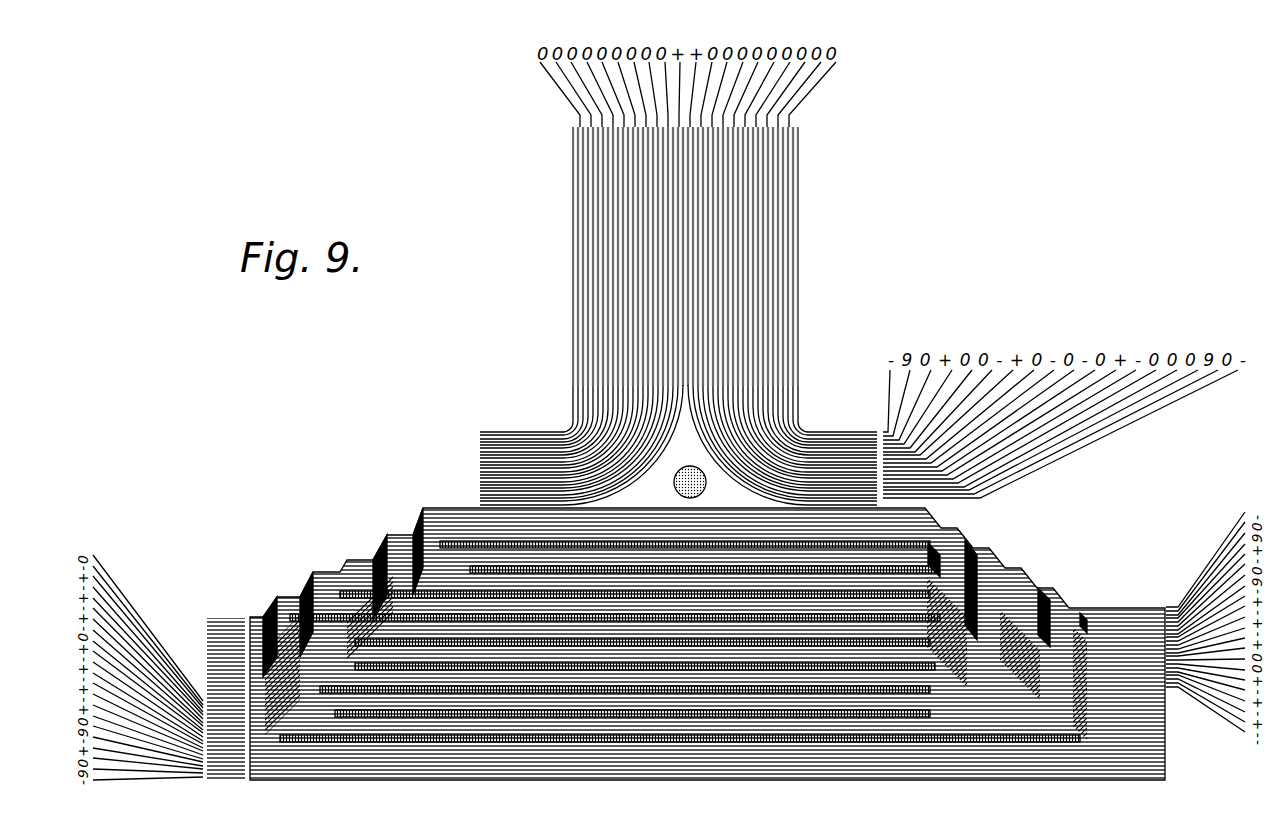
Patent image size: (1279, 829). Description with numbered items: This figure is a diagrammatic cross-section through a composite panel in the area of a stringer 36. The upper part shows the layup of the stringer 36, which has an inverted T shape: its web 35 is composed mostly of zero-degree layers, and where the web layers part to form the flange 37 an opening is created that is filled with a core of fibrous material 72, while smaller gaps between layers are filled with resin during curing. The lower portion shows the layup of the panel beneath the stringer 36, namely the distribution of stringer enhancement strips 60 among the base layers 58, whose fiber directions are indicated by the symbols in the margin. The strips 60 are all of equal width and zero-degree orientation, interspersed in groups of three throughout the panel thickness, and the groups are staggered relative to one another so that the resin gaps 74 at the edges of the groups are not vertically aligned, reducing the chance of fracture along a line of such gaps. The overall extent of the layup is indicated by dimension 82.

The web 35 is at (800, 240).
The stringer 36 is at (812, 318).
The flange 37 is at (826, 430).
The base layers 58 is at (233, 628).
The stringer enhancement strips 60 is at (443, 545).
The core of fibrous material 72 is at (701, 492).
The resin gaps 74 is at (940, 560).
The overall width 82 is at (1090, 780).